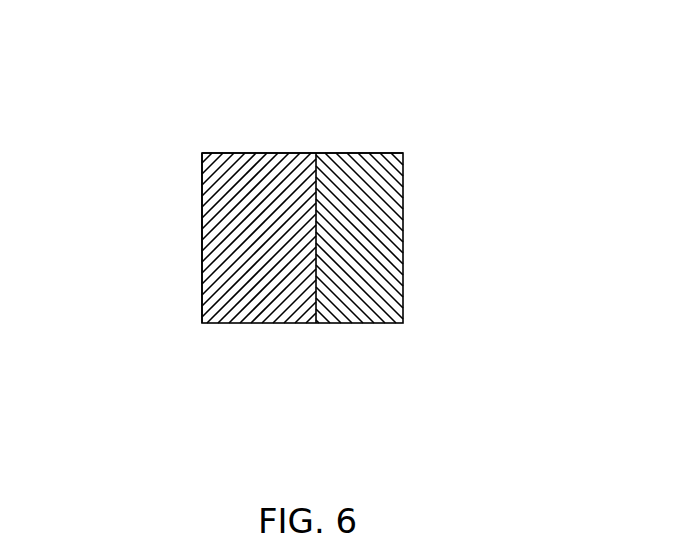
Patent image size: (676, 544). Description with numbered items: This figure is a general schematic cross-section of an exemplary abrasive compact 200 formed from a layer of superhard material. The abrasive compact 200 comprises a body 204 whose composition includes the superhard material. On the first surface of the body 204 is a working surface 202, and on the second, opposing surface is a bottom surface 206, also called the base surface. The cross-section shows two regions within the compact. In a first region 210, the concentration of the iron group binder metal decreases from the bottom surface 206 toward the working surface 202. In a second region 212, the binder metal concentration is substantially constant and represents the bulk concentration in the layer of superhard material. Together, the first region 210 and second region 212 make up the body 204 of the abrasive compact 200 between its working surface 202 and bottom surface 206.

The abrasive compact 200 is at (341, 210).
The working surface 202 is at (300, 228).
The body 204 is at (267, 128).
The bottom surface 206 is at (198, 237).
The first region 210 is at (252, 282).
The second region 212 is at (368, 280).